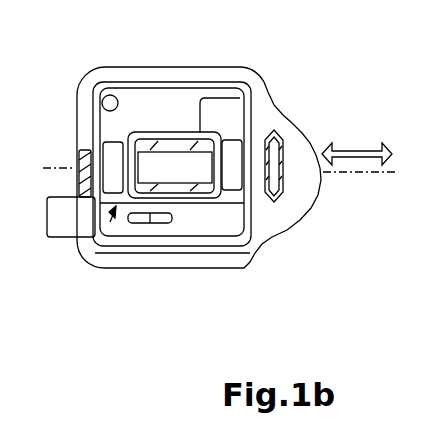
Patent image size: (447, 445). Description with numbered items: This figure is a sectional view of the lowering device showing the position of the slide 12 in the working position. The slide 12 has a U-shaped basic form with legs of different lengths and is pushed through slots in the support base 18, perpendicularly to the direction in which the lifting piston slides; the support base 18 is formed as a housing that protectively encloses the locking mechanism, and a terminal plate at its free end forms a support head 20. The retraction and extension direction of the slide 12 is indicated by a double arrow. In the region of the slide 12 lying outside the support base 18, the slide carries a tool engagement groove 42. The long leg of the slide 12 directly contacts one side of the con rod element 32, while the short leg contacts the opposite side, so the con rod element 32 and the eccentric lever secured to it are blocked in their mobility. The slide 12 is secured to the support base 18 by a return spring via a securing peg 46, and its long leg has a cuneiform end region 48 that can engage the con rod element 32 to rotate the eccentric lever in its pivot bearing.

The slide 12 is at (277, 113).
The support base 18 is at (98, 80).
The support head 20 is at (263, 82).
The con rod element 32 is at (126, 136).
The tool engagement groove 42 is at (274, 197).
The securing peg 46 is at (151, 226).
The cuneiform end region 48 is at (81, 239).